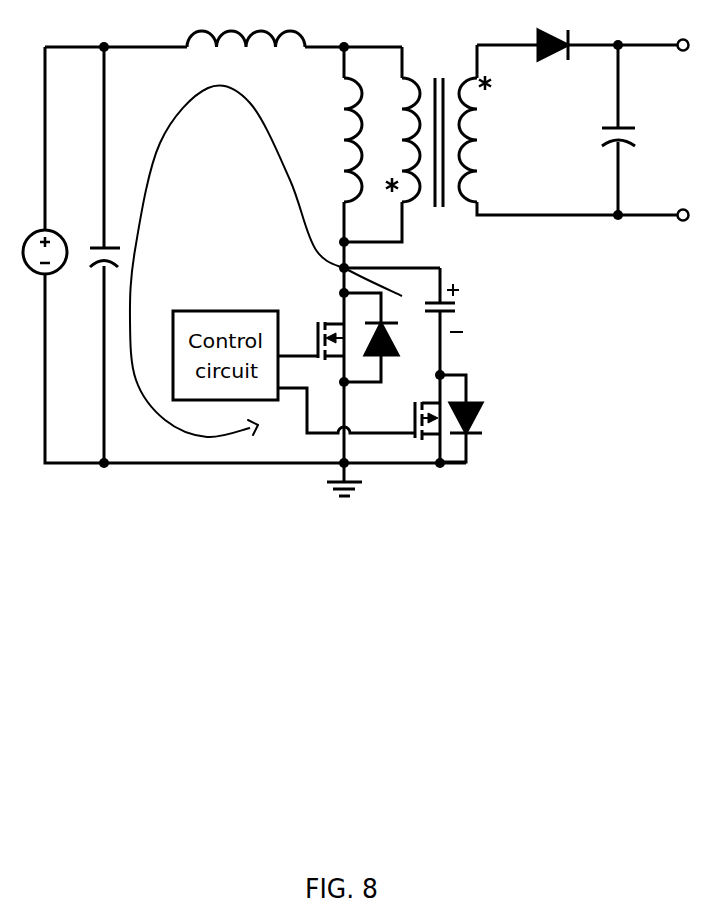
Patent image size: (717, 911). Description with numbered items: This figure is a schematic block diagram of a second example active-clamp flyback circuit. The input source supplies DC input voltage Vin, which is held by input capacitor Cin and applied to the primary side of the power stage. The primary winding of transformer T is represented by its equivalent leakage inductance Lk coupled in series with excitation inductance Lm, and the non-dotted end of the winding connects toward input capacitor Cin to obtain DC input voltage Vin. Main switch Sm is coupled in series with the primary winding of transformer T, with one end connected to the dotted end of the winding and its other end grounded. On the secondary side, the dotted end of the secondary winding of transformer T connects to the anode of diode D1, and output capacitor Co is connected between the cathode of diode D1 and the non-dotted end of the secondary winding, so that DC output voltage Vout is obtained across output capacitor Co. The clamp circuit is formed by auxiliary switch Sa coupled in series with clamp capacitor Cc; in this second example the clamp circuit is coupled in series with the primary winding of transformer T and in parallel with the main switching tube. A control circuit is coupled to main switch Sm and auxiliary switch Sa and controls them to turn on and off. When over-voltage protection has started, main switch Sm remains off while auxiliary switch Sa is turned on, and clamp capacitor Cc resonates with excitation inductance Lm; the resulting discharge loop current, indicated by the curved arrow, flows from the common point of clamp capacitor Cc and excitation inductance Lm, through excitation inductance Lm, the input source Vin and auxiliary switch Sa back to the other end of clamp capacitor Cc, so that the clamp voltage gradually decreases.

The DC input voltage Vin is at (56, 238).
The input capacitor Cin is at (117, 235).
The leakage inductance Lk is at (246, 51).
The excitation inductance Lm is at (336, 140).
The transformer T is at (502, 125).
The diode D1 is at (547, 41).
The output capacitor Co is at (604, 130).
The DC output voltage Vout is at (653, 117).
The main switch Sm is at (338, 337).
The auxiliary switch Sa is at (380, 365).
The clamp capacitor Cc is at (424, 300).